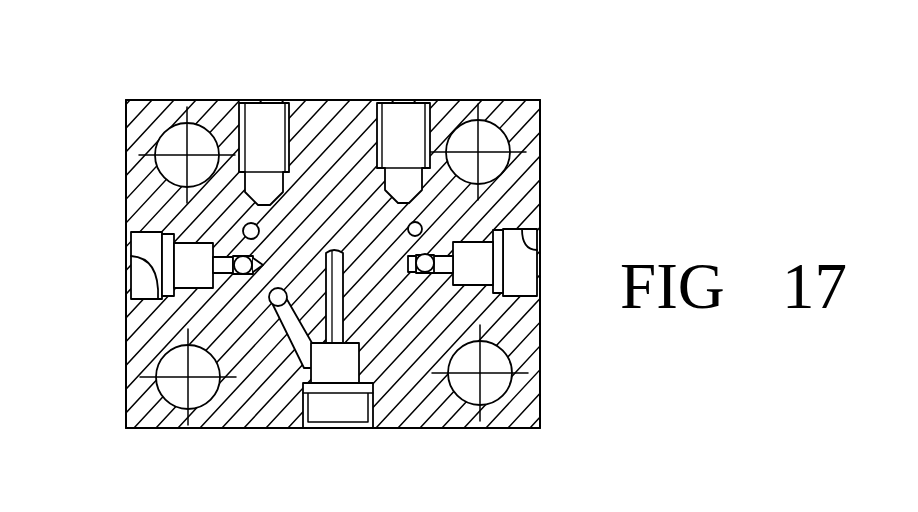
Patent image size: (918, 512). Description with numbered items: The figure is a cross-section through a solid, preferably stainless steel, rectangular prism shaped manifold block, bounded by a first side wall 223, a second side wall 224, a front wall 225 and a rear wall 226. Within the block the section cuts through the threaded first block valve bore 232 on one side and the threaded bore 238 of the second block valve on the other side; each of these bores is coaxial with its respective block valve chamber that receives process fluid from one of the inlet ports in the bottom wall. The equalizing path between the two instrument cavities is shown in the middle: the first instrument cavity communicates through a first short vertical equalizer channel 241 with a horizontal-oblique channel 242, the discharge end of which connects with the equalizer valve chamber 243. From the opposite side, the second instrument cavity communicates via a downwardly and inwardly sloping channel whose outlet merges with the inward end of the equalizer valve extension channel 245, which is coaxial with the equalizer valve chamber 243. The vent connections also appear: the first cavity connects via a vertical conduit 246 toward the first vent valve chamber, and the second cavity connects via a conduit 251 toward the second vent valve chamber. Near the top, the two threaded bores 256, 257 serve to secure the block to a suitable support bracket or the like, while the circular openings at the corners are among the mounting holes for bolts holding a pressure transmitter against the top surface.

The first side wall 223 is at (126, 163).
The second side wall 224 is at (540, 332).
The front wall 225 is at (487, 428).
The rear wall 226 is at (168, 100).
The threaded first block valve bore 232 is at (130, 256).
The threaded bore of the second block valve 238 is at (540, 251).
The first short vertical equalizer channel 241 is at (270, 302).
The horizontal-oblique channel 242 is at (303, 362).
The equalizer valve chamber 243 is at (358, 352).
The equalizer valve extension channel 245 is at (343, 262).
The vertical conduit 246 is at (244, 226).
The conduit 251 is at (409, 224).
The threaded bore 256 is at (285, 140).
The threaded bore 257 is at (385, 137).